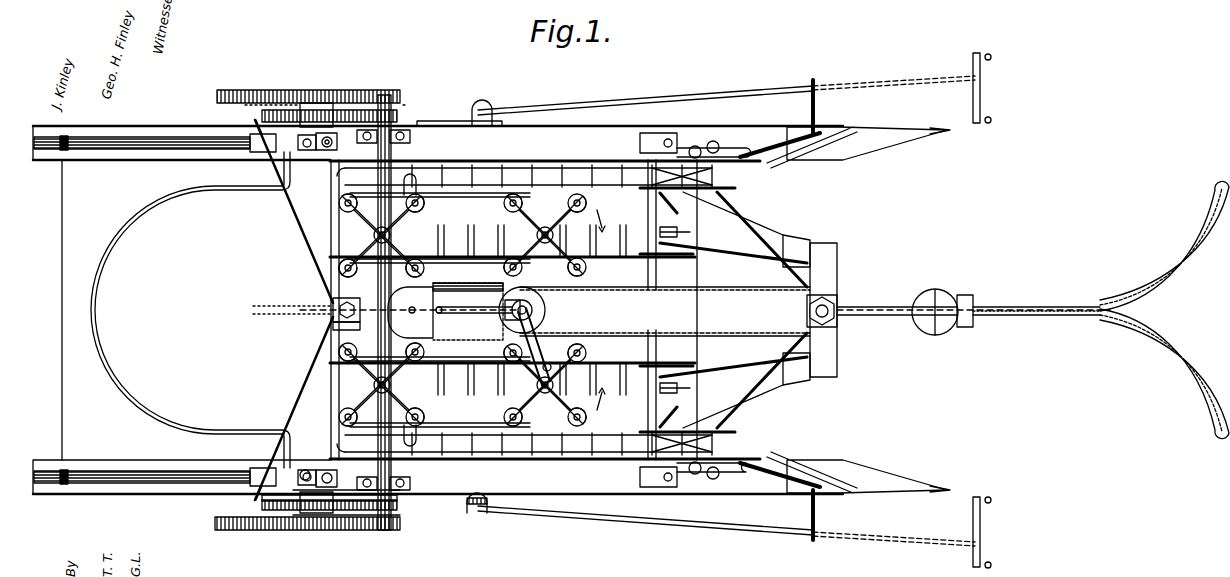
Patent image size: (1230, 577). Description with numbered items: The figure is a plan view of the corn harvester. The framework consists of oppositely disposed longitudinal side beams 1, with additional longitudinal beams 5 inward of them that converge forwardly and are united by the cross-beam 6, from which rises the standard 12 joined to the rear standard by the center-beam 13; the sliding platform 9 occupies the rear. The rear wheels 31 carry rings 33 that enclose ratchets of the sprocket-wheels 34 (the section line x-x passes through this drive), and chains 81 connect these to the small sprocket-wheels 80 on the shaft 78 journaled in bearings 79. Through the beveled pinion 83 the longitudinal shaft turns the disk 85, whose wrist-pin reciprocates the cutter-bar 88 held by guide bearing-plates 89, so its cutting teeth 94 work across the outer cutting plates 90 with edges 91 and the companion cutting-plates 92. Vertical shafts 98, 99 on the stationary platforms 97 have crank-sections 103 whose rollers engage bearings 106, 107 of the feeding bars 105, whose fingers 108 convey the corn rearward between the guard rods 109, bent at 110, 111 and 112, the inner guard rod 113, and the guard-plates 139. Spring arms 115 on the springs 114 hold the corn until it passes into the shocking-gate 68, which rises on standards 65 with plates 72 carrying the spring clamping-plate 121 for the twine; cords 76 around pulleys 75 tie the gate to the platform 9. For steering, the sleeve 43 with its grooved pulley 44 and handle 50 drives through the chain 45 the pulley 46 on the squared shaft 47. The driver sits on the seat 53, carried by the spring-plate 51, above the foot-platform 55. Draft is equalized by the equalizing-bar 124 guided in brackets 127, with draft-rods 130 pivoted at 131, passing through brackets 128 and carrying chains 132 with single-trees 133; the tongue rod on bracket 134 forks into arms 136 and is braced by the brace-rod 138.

The longitudinal side beams 1 is at (181, 122).
The additional longitudinal beams 5 is at (795, 248).
The cross-beam 6 is at (838, 270).
The horizontal platform 9 is at (66, 311).
The standard 12 is at (835, 330).
The center-beam 13 is at (772, 318).
The rear wheels 31 is at (228, 92).
The circular rings or bands 33 is at (343, 92).
The sprocket-wheels 34 is at (318, 512).
The vertical sleeve 43 is at (547, 306).
The grooved pulley 44 is at (548, 322).
The chain 45 is at (706, 330).
The grooved pulley 46 is at (930, 300).
The squared shaft 47 is at (937, 335).
The handle 50 is at (478, 303).
The spring-plate 51 is at (410, 312).
The seat 53 is at (468, 291).
The foot-platform 55 is at (468, 311).
The standards 65 is at (306, 468).
The shocking-gate 68 is at (100, 296).
The longitudinally extending plates 72 is at (260, 148).
The grooved pulley 75 is at (65, 152).
The cords 76 is at (145, 150).
The shaft 78 is at (340, 270).
The bearings 79 is at (405, 505).
The small sprocket-wheels 80 is at (397, 115).
The chains 81 is at (352, 510).
The beveled pinion 83 is at (340, 332).
The disk 85 is at (655, 356).
The cutter-bar 88 is at (655, 270).
The guide bearing-plates 89 is at (650, 133).
The outer cutting plates 90 is at (722, 140).
The cutting edge 91 is at (715, 182).
The cutting-plates 92 is at (725, 214).
The cutting teeth 94 is at (670, 203).
The stationary platforms 97 is at (512, 310).
The vertical shaft 98 is at (345, 210).
The vertical shaft 99 is at (600, 215).
The crank-section 103 is at (545, 310).
The bars 105 is at (736, 189).
The circular bearing 106 is at (505, 352).
The circular bearing 107 is at (505, 267).
The teeth or fingers 108 is at (562, 160).
The guide or guard rods 109 is at (608, 462).
The bend 110 is at (855, 150).
The bend 111 is at (945, 131).
The bend 112 is at (780, 142).
The inner guard rod 113 is at (600, 160).
The springs 114 is at (333, 304).
The arms 115 is at (292, 222).
The spring clamping-plate 121 is at (330, 515).
The equalizing-bar 124 is at (477, 510).
The brackets 127 is at (450, 120).
The bracket 128 is at (813, 540).
The draft-rods 130 is at (695, 100).
The pivotal connection 131 is at (484, 108).
The chains 132 is at (913, 80).
The single-trees 133 is at (982, 78).
The bracket 134 is at (975, 325).
The arms 136 is at (1205, 228).
The brace-rod 138 is at (1048, 306).
The guard-plates 139 is at (540, 157).
The section line x is at (322, 103).